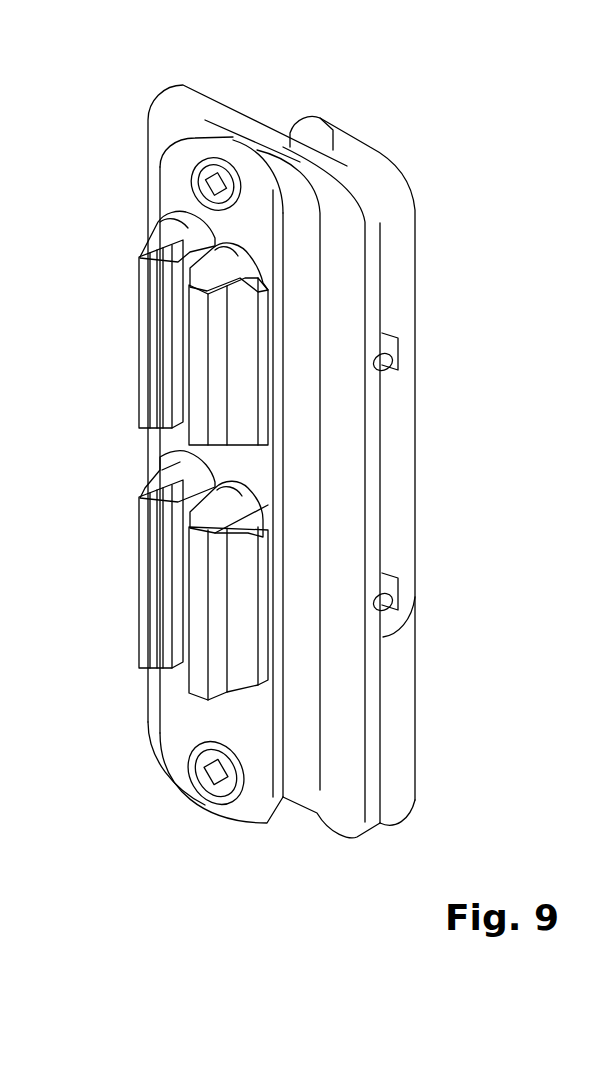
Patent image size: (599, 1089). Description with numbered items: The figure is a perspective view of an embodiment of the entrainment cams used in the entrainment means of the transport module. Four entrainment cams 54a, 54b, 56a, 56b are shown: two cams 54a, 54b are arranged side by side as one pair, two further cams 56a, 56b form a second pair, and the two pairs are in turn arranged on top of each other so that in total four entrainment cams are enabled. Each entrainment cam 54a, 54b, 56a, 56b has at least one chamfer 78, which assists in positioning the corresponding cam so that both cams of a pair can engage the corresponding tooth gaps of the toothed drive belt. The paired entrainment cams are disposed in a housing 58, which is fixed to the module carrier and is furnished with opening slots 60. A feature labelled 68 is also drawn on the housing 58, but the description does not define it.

The entrainment cam 54a is at (213, 180).
The entrainment cam 54b is at (215, 268).
The entrainment cam 56a is at (147, 648).
The entrainment cam 56b is at (215, 683).
The housing 58 is at (303, 730).
The opening slots 60 is at (255, 445).
The lower retaining clip 68 is at (230, 683).
The chamfer 78 is at (173, 350).